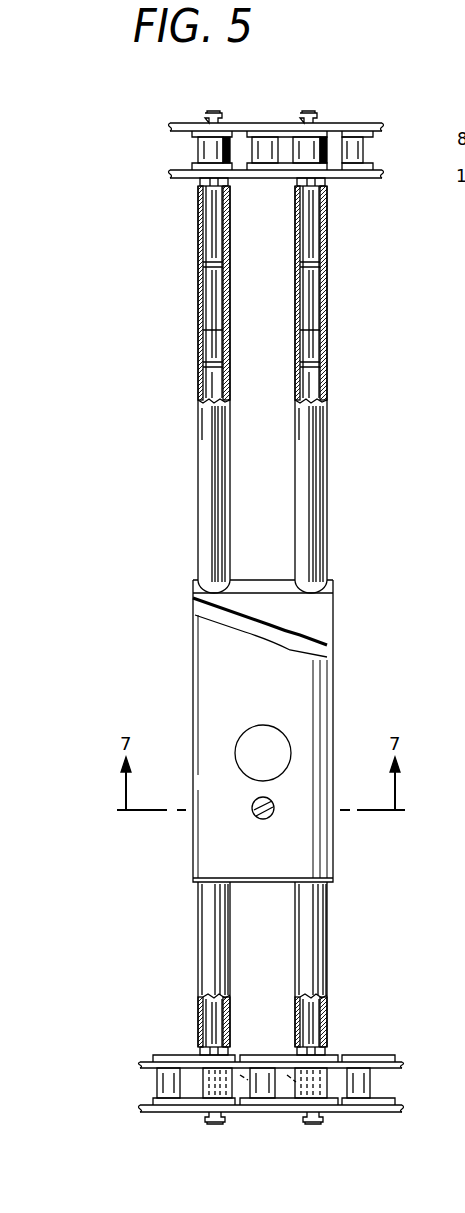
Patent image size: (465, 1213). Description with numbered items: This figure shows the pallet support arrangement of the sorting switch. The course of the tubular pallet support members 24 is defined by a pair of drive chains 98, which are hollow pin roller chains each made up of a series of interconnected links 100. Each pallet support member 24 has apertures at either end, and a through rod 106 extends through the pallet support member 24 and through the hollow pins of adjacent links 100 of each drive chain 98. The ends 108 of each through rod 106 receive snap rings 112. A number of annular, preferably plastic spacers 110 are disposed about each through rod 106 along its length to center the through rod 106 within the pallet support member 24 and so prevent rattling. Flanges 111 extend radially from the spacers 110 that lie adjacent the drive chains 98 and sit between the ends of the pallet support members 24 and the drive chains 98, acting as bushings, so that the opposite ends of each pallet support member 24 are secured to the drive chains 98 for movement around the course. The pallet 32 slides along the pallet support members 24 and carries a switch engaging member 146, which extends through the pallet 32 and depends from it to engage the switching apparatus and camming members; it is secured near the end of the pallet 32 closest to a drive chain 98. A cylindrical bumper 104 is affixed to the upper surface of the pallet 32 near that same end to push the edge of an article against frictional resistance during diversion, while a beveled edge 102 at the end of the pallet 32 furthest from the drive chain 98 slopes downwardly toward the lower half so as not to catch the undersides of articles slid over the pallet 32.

The pallet support member 24 is at (198, 408).
The pallet 32 is at (196, 816).
The drive chain 98 is at (357, 185).
The link 100 is at (345, 152).
The beveled edge 102 is at (265, 582).
The cylindrical bumper 104 is at (282, 740).
The through rod 106 is at (306, 328).
The end 108 is at (205, 112).
The spacer 110 is at (212, 206).
The flange 111 is at (198, 184).
The snap ring 112 is at (206, 112).
The switch engaging member 146 is at (275, 812).